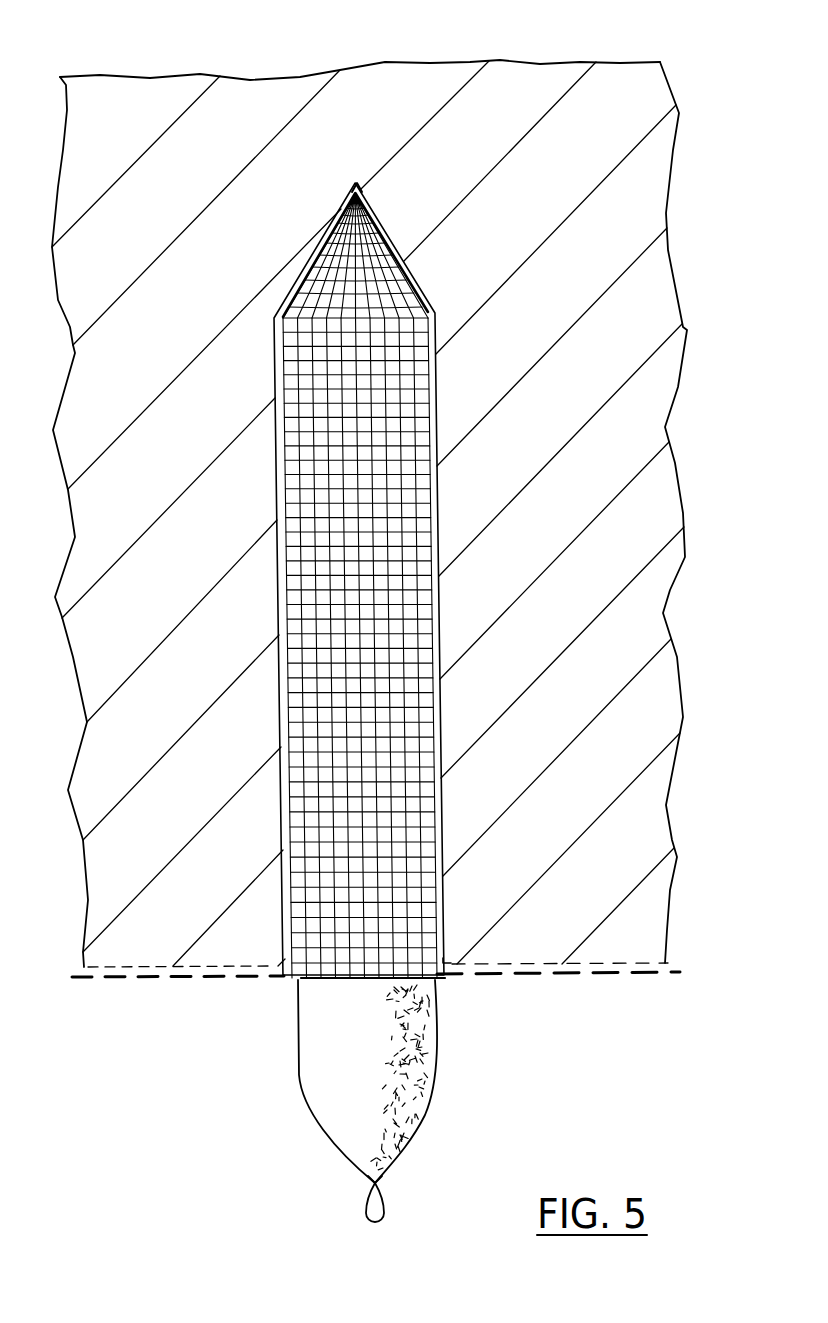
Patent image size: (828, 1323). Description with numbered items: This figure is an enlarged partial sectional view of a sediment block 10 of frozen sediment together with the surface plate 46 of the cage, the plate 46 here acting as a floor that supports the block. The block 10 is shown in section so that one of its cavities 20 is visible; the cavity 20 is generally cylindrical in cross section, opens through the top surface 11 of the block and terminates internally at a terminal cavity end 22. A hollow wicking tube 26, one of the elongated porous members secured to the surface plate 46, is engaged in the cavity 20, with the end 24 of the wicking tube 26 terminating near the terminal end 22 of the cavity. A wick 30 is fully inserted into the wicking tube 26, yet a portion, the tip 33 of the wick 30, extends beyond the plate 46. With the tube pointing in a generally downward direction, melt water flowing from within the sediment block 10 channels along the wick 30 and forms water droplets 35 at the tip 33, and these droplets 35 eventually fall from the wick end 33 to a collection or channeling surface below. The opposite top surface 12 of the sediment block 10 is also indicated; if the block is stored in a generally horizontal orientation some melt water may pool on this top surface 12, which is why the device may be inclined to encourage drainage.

The block 10 is at (663, 176).
The top surface 11 is at (557, 963).
The top surface 12 is at (379, 62).
The cavities 20 is at (447, 963).
The terminal cavity ends 22 is at (357, 180).
The ends of the wicking tubes 24 is at (373, 203).
The wicking tubes 26 is at (405, 599).
The wick 30 is at (420, 1132).
The tip of the wick 33 is at (380, 1185).
The water droplets 35 is at (367, 1198).
The surface plate 46 is at (607, 975).